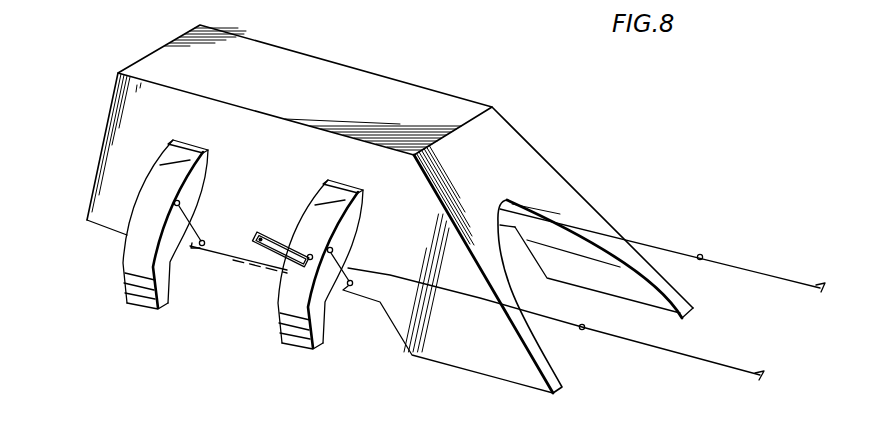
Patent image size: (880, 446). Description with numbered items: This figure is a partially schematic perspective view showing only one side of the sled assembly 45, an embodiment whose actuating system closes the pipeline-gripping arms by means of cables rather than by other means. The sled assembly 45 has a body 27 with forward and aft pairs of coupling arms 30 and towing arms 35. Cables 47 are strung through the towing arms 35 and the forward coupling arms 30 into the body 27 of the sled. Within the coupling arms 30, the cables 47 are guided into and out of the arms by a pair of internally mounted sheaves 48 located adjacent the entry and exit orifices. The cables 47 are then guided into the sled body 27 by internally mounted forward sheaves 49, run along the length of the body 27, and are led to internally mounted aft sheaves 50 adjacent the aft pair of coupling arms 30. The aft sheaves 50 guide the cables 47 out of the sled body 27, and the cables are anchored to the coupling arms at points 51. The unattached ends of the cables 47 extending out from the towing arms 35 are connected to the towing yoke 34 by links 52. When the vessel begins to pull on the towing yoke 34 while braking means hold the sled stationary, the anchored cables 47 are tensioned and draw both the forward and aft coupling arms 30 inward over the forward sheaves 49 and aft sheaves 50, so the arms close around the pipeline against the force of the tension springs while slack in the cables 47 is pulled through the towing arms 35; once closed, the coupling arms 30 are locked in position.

The body 27 is at (366, 68).
The sled assembly 45 is at (432, 65).
The coupling arms 30 is at (123, 273).
The towing yoke 34 is at (787, 282).
The cables 47 is at (233, 262).
The links 52 is at (703, 255).
The anchoring points 51 is at (174, 203).
The aft sheaves 50 is at (205, 241).
The towing arms 35 is at (284, 235).
The sheaves 48 is at (312, 256).
The forward sheaves 49 is at (352, 290).